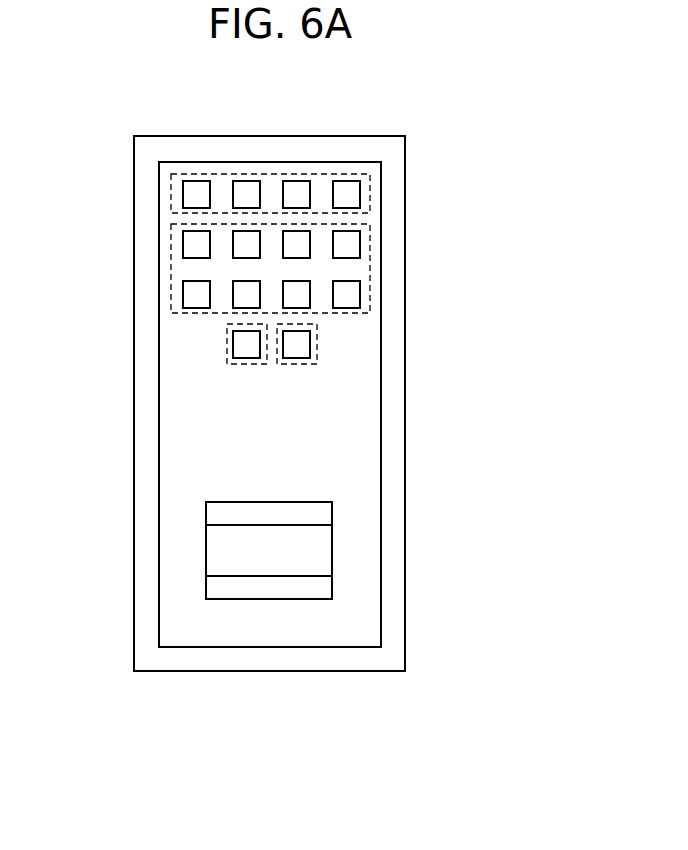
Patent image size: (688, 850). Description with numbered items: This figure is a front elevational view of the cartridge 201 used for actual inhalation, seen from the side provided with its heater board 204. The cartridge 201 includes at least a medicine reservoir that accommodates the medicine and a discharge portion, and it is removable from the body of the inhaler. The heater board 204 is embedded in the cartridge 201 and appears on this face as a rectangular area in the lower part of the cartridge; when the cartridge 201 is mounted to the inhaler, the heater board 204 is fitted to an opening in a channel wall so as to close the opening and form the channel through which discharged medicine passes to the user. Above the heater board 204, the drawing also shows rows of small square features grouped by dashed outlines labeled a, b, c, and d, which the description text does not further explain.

The cartridge 201 is at (134, 570).
The heater board 204 is at (332, 545).
The key group a is at (171, 191).
The key group b is at (171, 267).
The key c is at (227, 350).
The key d is at (317, 350).